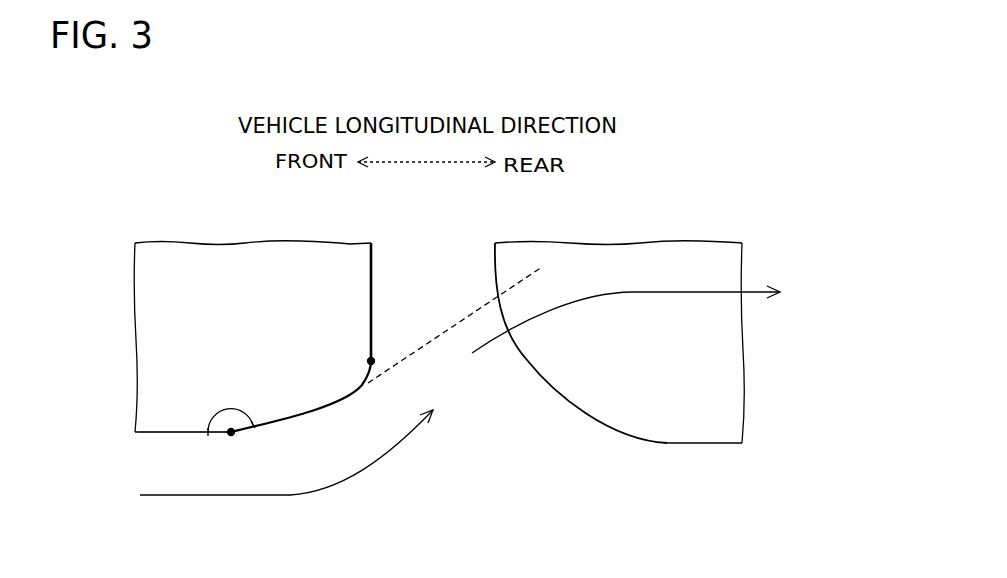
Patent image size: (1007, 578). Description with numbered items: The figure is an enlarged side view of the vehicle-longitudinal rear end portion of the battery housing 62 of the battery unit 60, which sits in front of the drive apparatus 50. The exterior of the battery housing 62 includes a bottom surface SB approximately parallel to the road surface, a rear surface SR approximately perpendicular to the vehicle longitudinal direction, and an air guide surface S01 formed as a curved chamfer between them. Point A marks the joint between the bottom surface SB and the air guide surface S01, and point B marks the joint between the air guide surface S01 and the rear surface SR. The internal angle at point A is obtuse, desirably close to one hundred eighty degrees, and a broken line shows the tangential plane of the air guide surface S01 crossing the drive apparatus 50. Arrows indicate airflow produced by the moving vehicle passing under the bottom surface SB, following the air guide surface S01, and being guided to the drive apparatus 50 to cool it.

The battery housing 62 is at (287, 258).
The battery unit 60 is at (252, 315).
The drive apparatus 50 is at (545, 258).
The air guide surface S01 is at (316, 412).
The rear surface SR is at (372, 293).
The bottom surface SB is at (173, 437).
The point A is at (231, 448).
The point B is at (362, 362).